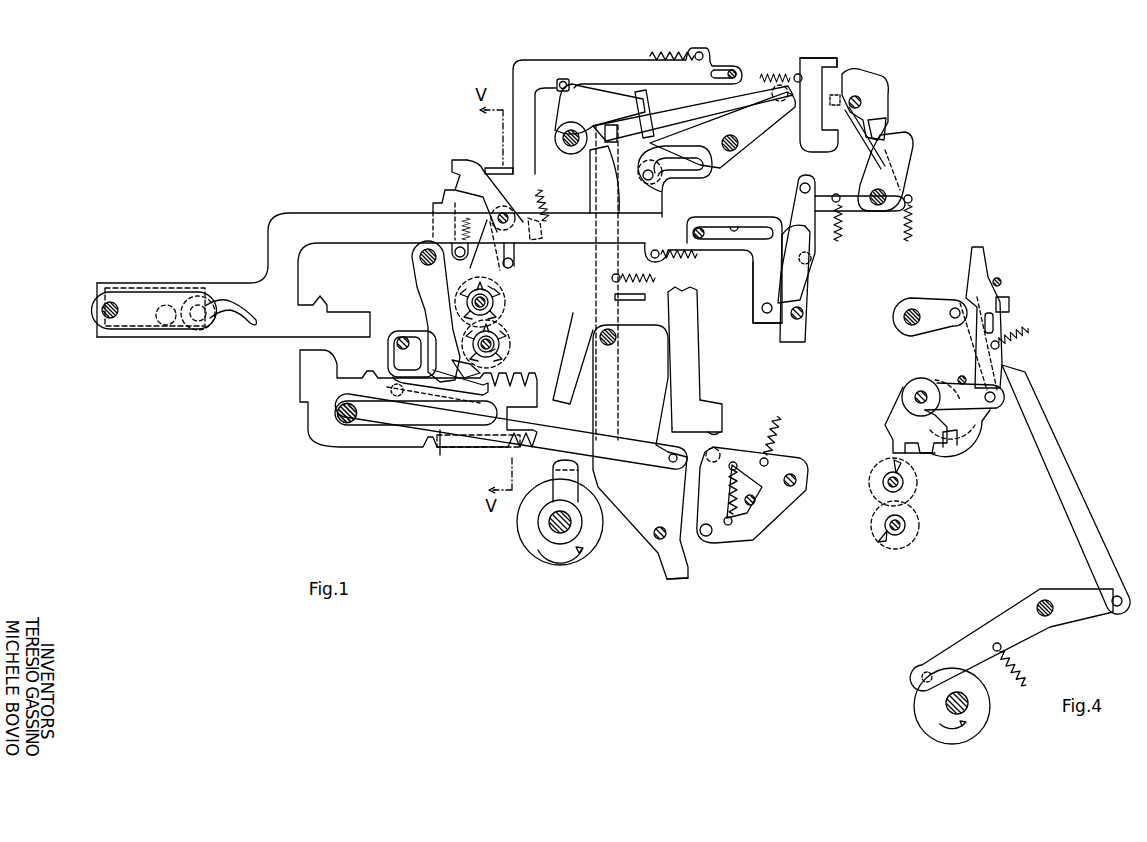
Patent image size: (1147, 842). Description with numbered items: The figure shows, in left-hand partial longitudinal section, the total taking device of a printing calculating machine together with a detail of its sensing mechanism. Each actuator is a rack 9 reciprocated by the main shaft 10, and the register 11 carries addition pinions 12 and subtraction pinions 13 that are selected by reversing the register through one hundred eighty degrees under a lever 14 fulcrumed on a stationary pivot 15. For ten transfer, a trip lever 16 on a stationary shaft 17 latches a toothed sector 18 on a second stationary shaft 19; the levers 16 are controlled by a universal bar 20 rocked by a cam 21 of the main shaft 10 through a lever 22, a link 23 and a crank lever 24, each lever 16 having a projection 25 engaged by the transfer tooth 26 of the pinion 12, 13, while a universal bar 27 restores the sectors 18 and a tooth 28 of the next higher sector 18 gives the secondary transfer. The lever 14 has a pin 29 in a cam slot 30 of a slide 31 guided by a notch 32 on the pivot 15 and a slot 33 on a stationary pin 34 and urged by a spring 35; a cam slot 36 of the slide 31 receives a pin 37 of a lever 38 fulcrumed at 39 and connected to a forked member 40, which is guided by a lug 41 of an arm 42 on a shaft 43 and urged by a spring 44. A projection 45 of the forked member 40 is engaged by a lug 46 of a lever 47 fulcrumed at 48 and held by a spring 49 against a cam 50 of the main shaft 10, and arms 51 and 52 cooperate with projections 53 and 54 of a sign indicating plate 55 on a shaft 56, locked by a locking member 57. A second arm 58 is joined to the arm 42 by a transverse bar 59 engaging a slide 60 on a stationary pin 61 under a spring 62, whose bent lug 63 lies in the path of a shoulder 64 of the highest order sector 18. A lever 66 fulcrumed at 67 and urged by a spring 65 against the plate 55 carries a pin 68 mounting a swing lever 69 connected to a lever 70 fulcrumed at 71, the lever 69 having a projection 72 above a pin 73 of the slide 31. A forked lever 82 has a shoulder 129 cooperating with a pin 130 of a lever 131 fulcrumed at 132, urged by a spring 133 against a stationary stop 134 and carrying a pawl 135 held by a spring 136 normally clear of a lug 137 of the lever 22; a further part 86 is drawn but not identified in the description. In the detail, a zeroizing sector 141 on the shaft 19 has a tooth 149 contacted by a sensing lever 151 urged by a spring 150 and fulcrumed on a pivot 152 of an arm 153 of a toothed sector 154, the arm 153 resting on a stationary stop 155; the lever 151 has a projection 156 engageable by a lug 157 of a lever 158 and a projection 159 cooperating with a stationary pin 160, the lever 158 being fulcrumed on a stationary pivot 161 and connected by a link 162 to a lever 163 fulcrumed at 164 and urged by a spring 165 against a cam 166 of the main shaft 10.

In FIG. 1, the rack 9 is at (476, 451).
In FIG. 1, the main shaft 10 is at (566, 528).
In FIG. 4, the main shaft 10 is at (968, 703).
In FIG. 1, the register 11 is at (512, 322).
In FIG. 1, the addition pinions 12 is at (500, 342).
In FIG. 4, the addition pinions 12 is at (912, 527).
In FIG. 1, the subtraction pinions 13 is at (495, 303).
In FIG. 4, the subtraction pinions 13 is at (910, 492).
In FIG. 1, the lever 14 is at (142, 322).
In FIG. 1, the stationary pivot 15 is at (110, 302).
In FIG. 1, the trip lever 16 is at (420, 290).
In FIG. 1, the stationary shaft 17 is at (418, 256).
In FIG. 1, the toothed sector 18 is at (498, 183).
In FIG. 1, the second stationary shaft 19 is at (508, 213).
In FIG. 4, the second stationary shaft 19 is at (914, 394).
In FIG. 1, the universal bar 20 is at (415, 345).
In FIG. 1, the cam 21 is at (556, 470).
In FIG. 1, the lever 22 is at (646, 528).
In FIG. 1, the link 23 is at (648, 437).
In FIG. 1, the crank lever 24 is at (388, 362).
In FIG. 1, the projection 25 is at (470, 368).
In FIG. 1, the transfer tooth 26 is at (493, 290).
In FIG. 1, the universal bar 27 is at (516, 262).
In FIG. 1, the tooth 28 is at (459, 258).
In FIG. 1, the pin 29 is at (200, 328).
In FIG. 1, the cam slot 30 is at (212, 300).
In FIG. 1, the slide 31 is at (278, 233).
In FIG. 1, the notch 32 is at (166, 325).
In FIG. 1, the slot 33 is at (736, 226).
In FIG. 1, the stationary pin 34 is at (699, 226).
In FIG. 1, the spring 35 is at (698, 255).
In FIG. 1, the cam slot 36 is at (664, 180).
In FIG. 1, the pin 37 is at (648, 182).
In FIG. 1, the lever 38 is at (760, 145).
In FIG. 1, the fulcrum 39 is at (731, 152).
In FIG. 1, the forked member 40 is at (683, 108).
In FIG. 1, the lug 41 is at (656, 128).
In FIG. 1, the arm 42 is at (617, 106).
In FIG. 1, the shaft 43 is at (571, 152).
In FIG. 1, the spring 44 is at (776, 74).
In FIG. 1, the projection 45 is at (614, 141).
In FIG. 1, the lug 46 is at (600, 158).
In FIG. 1, the lever 47 is at (596, 265).
In FIG. 1, the fulcrum 48 is at (617, 340).
In FIG. 1, the spring 49 is at (656, 278).
In FIG. 1, the cam 50 is at (520, 540).
In FIG. 1, the arm 51 is at (837, 60).
In FIG. 1, the arm 52 is at (825, 145).
In FIG. 1, the projection 53 is at (868, 74).
In FIG. 1, the projection 54 is at (884, 126).
In FIG. 1, the plate 55 is at (888, 82).
In FIG. 1, the shaft 56 is at (862, 102).
In FIG. 1, the locking member 57 is at (850, 166).
In FIG. 1, the second arm 58 is at (557, 140).
In FIG. 1, the transverse bar 59 is at (556, 84).
In FIG. 1, the slide 60 is at (583, 68).
In FIG. 1, the stationary pin 61 is at (737, 72).
In FIG. 1, the spring 62 is at (650, 56).
In FIG. 1, the bent lug 63 is at (490, 168).
In FIG. 1, the shoulder 64 is at (456, 165).
In FIG. 1, the spring 65 is at (842, 228).
In FIG. 1, the lever 66 is at (902, 162).
In FIG. 1, the fulcrum 67 is at (880, 205).
In FIG. 1, the pin 68 is at (800, 186).
In FIG. 1, the swing lever 69 is at (797, 205).
In FIG. 1, the lever 70 is at (810, 285).
In FIG. 1, the fulcrum 71 is at (803, 313).
In FIG. 1, the projection 72 is at (760, 285).
In FIG. 1, the pin 73 is at (766, 313).
In FIG. 1, the forked lever 82 is at (694, 323).
In FIG. 1, the foot 86 is at (712, 404).
In FIG. 1, the shoulder 129 is at (722, 430).
In FIG. 1, the pin 130 is at (720, 452).
In FIG. 1, the lever 131 is at (775, 512).
In FIG. 1, the fulcrum 132 is at (792, 473).
In FIG. 1, the spring 133 is at (778, 418).
In FIG. 1, the stationary stop 134 is at (730, 490).
In FIG. 1, the pawl 135 is at (697, 552).
In FIG. 1, the spring 136 is at (724, 517).
In FIG. 1, the lug 137 is at (675, 577).
In FIG. 4, the zeroizing sector 141 is at (926, 456).
In FIG. 4, the tooth 149 is at (950, 450).
In FIG. 4, the spring 150 is at (1026, 332).
In FIG. 4, the sensing lever 151 is at (978, 434).
In FIG. 4, the pivot 152 is at (992, 402).
In FIG. 4, the arm 153 is at (940, 381).
In FIG. 4, the toothed sector 154 is at (893, 418).
In FIG. 4, the stationary stop 155 is at (960, 374).
In FIG. 4, the projection 156 is at (998, 318).
In FIG. 4, the lug 157 is at (1008, 298).
In FIG. 4, the lever 158 is at (935, 300).
In FIG. 4, the projection 159 is at (970, 276).
In FIG. 4, the stationary pin 160 is at (999, 278).
In FIG. 4, the stationary pivot 161 is at (910, 322).
In FIG. 4, the link 162 is at (1048, 438).
In FIG. 4, the lever 163 is at (1005, 613).
In FIG. 4, the fulcrum 164 is at (1047, 600).
In FIG. 4, the spring 165 is at (1018, 668).
In FIG. 4, the cam 166 is at (985, 718).